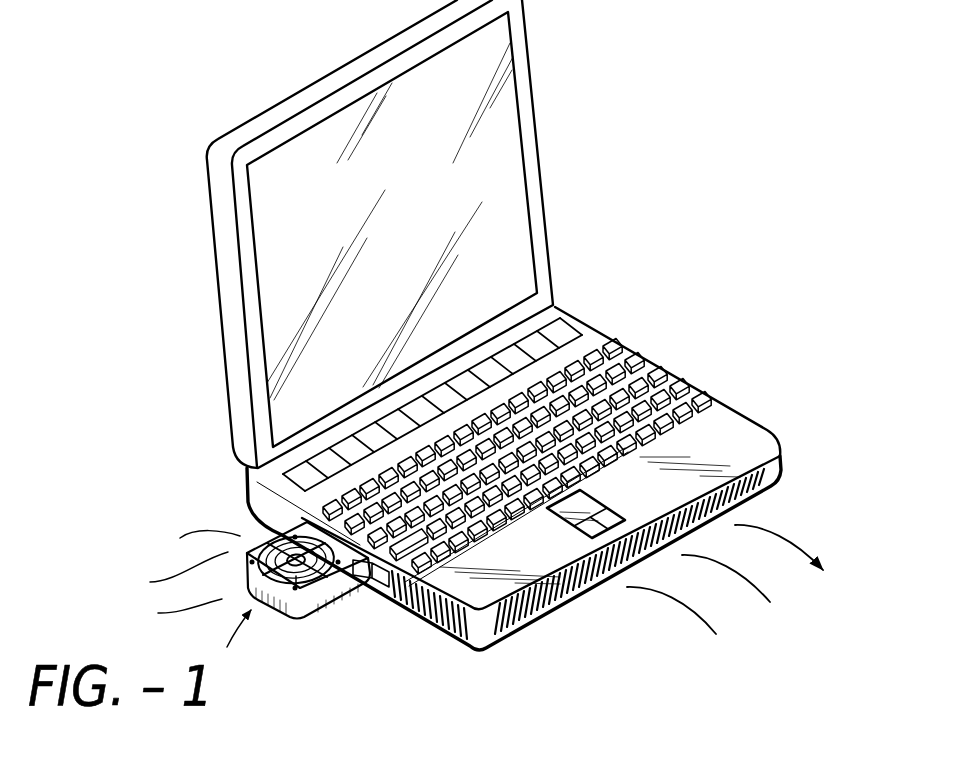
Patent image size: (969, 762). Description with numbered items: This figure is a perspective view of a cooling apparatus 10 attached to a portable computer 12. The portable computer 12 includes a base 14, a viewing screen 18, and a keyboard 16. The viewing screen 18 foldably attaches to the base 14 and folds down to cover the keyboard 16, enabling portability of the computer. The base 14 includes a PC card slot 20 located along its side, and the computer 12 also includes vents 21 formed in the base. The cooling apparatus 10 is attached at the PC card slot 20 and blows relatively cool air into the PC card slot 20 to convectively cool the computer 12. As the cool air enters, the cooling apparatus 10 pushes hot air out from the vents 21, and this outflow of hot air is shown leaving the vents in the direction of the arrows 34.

The cooling apparatus 10 is at (260, 584).
The portable computer 12 is at (743, 435).
The base 14 is at (485, 632).
The keyboard 16 is at (643, 362).
The viewing screen 18 is at (503, 177).
The PC card slot 20 is at (386, 596).
The vents 21 is at (567, 607).
The arrows 34 is at (777, 530).